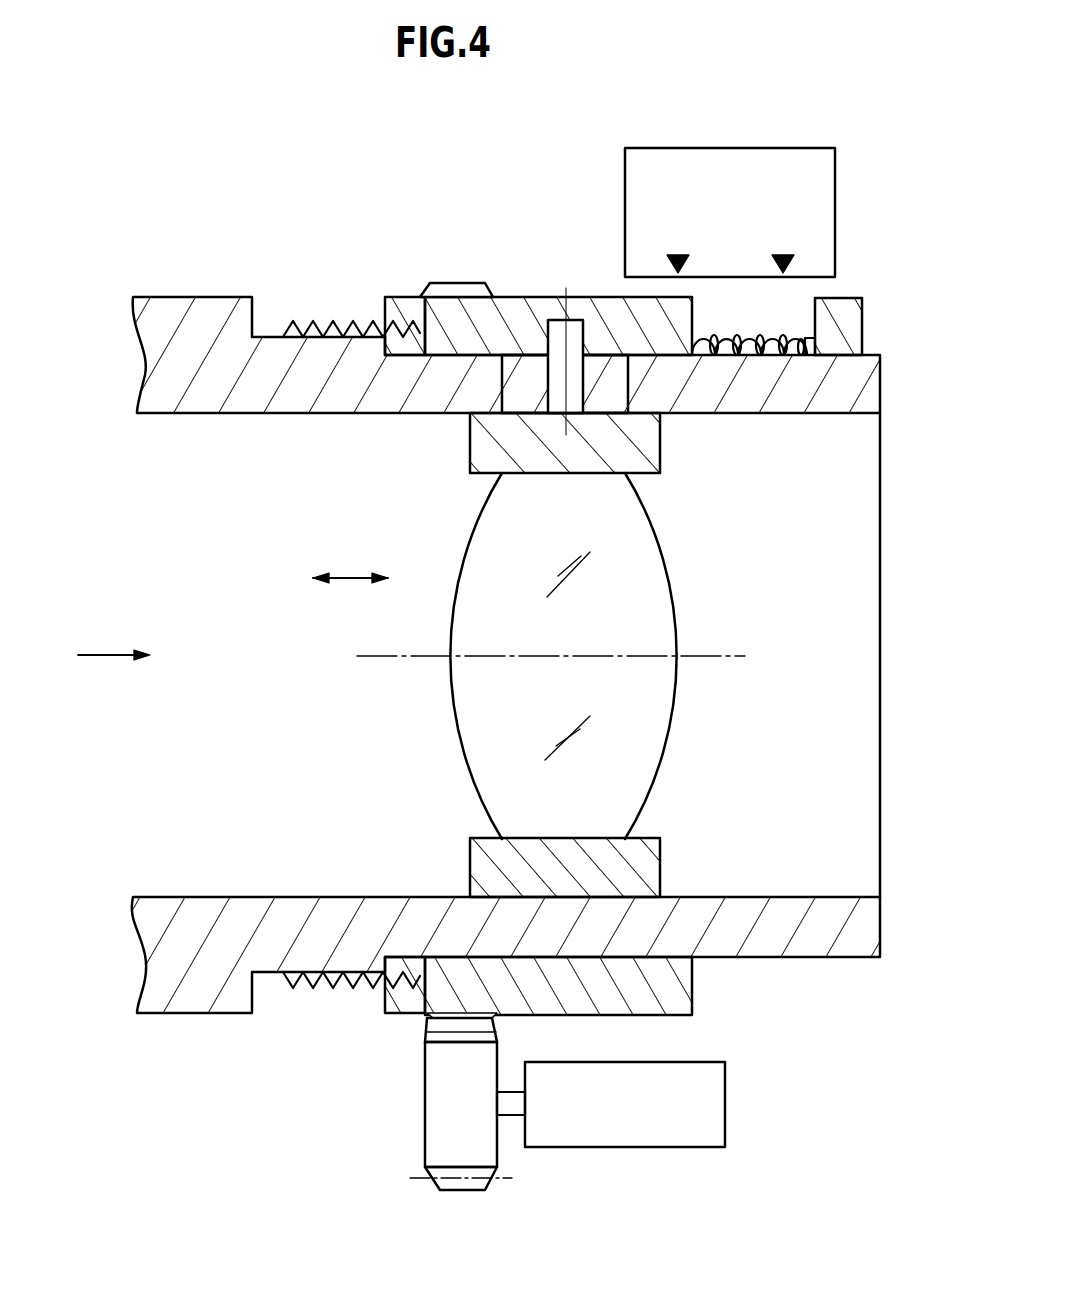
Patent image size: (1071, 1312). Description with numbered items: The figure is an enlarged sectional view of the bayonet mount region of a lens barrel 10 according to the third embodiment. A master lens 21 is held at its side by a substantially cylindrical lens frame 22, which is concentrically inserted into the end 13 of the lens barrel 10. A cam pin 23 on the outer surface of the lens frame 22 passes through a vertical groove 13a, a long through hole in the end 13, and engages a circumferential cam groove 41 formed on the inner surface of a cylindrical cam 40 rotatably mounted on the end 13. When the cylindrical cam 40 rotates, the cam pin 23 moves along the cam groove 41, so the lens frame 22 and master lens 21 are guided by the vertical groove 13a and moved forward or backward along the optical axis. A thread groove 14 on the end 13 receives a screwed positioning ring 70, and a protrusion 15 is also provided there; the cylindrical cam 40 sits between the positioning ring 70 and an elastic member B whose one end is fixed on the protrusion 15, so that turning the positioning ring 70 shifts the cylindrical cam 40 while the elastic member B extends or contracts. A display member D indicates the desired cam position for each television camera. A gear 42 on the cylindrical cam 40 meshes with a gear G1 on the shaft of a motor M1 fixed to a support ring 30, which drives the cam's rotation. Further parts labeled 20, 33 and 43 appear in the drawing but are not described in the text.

The lens barrel 10 is at (66, 186).
The end of the lens barrel 13 is at (325, 378).
The vertical groove 13a is at (523, 370).
The thread groove 14 is at (357, 313).
The protrusion 15 is at (862, 324).
The movable member 20 is at (556, 190).
The master lens 21 is at (668, 578).
The lens frame 22 is at (660, 452).
The cam pin 23 is at (575, 332).
The support ring 30 is at (300, 397).
The spring 33 is at (694, 302).
The cylindrical cam 40 is at (612, 340).
The cam groove 41 is at (557, 340).
The gear 42 is at (432, 297).
The frame 43 is at (203, 397).
The positioning ring 70 is at (398, 297).
The elastic member B is at (787, 340).
The display member D is at (835, 232).
The gear G1 is at (425, 1133).
The motor M1 is at (725, 1105).